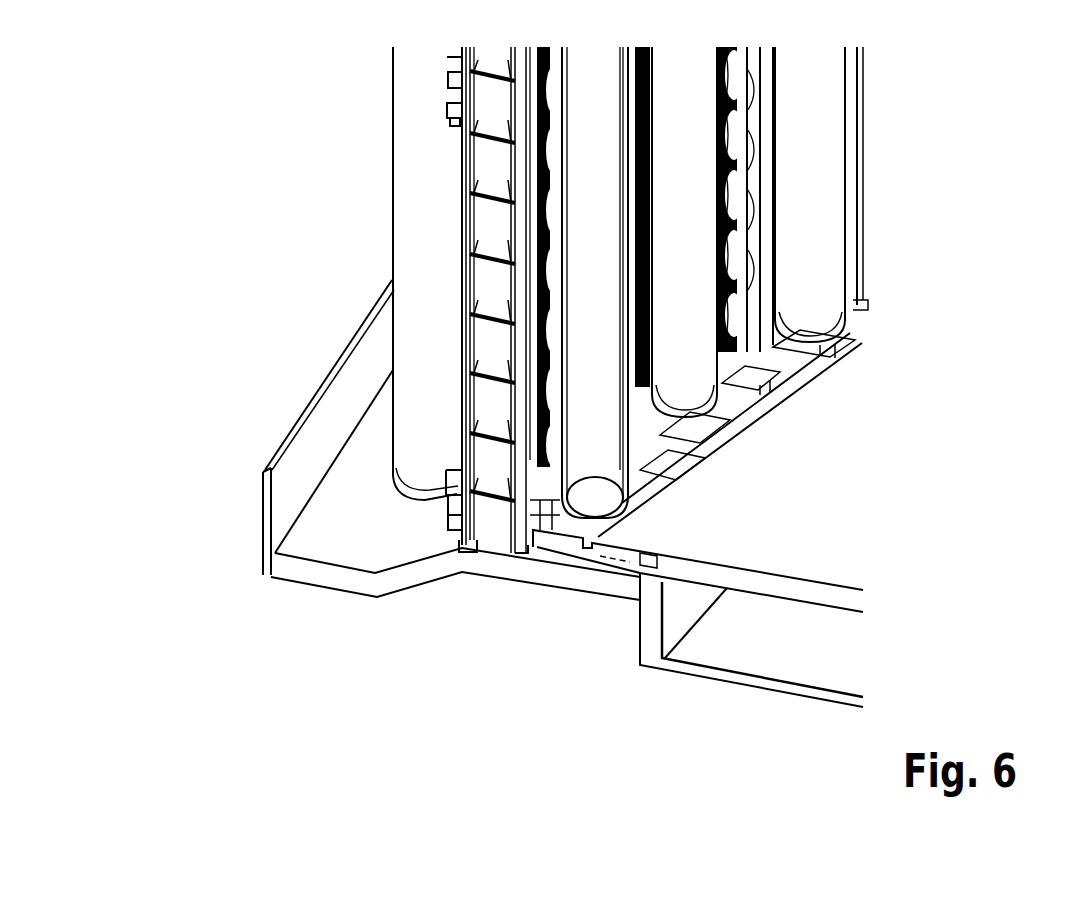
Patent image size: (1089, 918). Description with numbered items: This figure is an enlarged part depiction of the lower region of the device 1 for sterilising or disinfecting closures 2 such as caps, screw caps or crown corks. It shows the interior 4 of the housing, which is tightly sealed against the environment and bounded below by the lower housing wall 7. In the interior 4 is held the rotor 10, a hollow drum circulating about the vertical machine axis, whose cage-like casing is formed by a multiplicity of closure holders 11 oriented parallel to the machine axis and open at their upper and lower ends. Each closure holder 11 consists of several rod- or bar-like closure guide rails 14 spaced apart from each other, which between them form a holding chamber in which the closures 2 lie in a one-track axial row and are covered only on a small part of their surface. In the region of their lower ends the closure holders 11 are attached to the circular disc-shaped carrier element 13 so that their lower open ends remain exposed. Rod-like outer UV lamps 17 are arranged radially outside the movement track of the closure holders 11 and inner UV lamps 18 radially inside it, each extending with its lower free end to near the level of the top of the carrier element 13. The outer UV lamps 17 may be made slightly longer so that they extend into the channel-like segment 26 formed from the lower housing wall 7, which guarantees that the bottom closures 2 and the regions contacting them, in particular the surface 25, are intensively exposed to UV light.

The device 1 is at (182, 121).
The closures 2 is at (478, 225).
The interior 4 is at (874, 470).
The lower housing wall 7 is at (395, 606).
The rotor 10 is at (440, 404).
The closure holders 11 is at (454, 293).
The carrier element 13 is at (838, 597).
The closure guide rails 14 is at (738, 90).
The outer UV lamps 17 is at (413, 130).
The inner UV lamps 18 is at (812, 230).
The surface 25 is at (553, 565).
The channel-like segment 26 is at (327, 555).